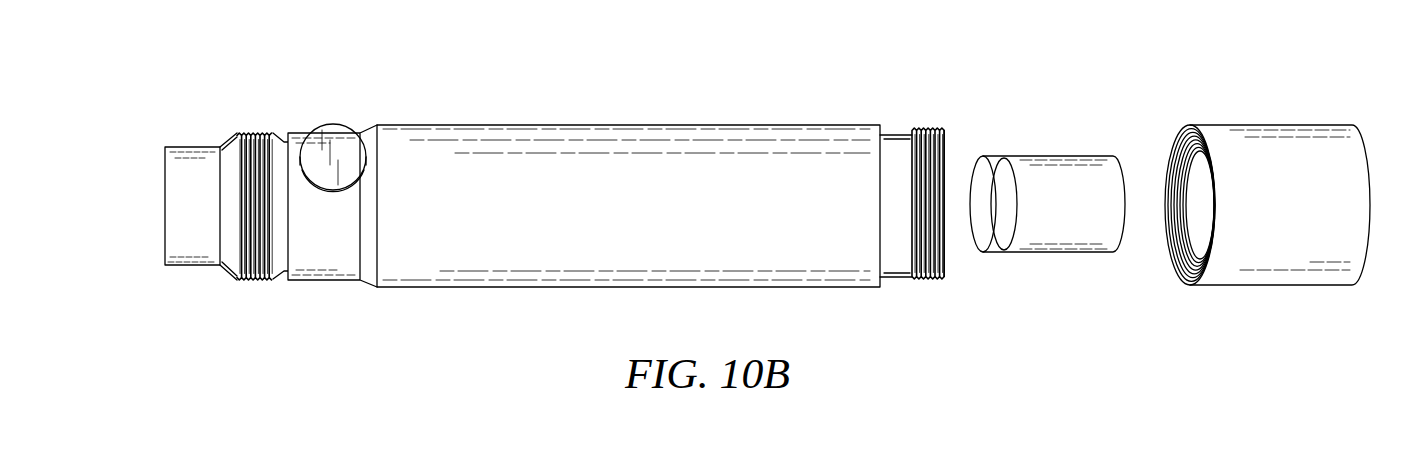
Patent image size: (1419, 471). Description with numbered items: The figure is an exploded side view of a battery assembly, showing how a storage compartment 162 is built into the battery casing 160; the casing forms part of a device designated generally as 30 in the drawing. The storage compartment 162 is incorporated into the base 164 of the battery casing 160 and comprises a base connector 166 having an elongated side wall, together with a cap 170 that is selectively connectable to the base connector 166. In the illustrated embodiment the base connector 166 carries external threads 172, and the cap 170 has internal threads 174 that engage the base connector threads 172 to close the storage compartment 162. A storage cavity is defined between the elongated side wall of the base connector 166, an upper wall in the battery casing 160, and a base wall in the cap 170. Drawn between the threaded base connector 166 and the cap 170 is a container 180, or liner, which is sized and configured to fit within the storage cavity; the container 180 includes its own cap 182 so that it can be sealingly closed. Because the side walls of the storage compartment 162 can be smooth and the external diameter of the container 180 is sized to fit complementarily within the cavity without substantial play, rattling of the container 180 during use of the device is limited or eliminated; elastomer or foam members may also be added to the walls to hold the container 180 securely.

The electrode/connector assembly 30 is at (197, 128).
The battery casing 160 is at (595, 118).
The storage compartment 162 is at (1257, 206).
The base 164 is at (919, 122).
The base connector 166 is at (942, 285).
The cap 170 is at (1268, 257).
The external threads 172 is at (915, 277).
The internal threads 174 is at (1175, 238).
The container 180 is at (1040, 165).
The cap 182 is at (1005, 187).